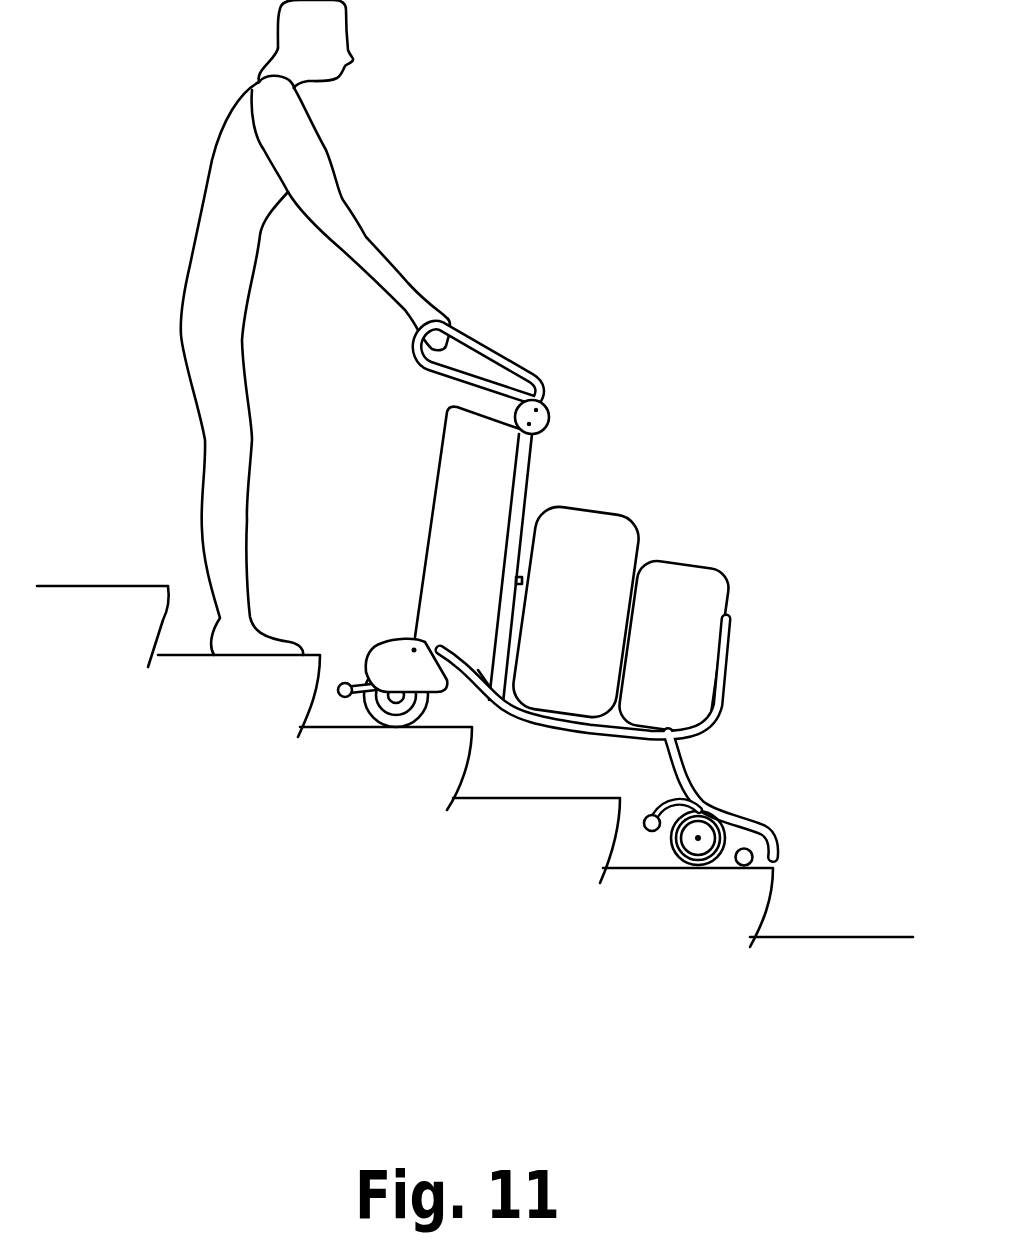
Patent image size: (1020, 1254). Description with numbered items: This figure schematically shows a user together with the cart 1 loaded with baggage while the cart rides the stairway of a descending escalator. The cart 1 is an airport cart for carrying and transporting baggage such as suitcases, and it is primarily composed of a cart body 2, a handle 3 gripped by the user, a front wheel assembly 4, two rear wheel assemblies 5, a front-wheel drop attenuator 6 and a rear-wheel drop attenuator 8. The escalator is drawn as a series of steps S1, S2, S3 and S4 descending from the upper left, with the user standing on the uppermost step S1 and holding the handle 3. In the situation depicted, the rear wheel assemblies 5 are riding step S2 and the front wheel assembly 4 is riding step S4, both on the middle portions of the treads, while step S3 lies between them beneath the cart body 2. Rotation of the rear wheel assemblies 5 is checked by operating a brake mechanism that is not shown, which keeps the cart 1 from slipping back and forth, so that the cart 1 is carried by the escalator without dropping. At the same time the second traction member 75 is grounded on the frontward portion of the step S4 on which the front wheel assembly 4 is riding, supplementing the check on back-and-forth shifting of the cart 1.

The cart 1 is at (735, 480).
The cart body 2 is at (596, 750).
The handle 3 is at (517, 340).
The front wheel assembly 4 is at (663, 859).
The rear wheel assemblies 5 is at (352, 716).
The front-wheel drop attenuator 6 is at (664, 791).
The rear-wheel drop attenuator 8 is at (350, 662).
The second traction member 75 is at (747, 873).
The step S1 is at (239, 696).
The step S2 is at (386, 768).
The step S3 is at (536, 840).
The step S4 is at (688, 907).